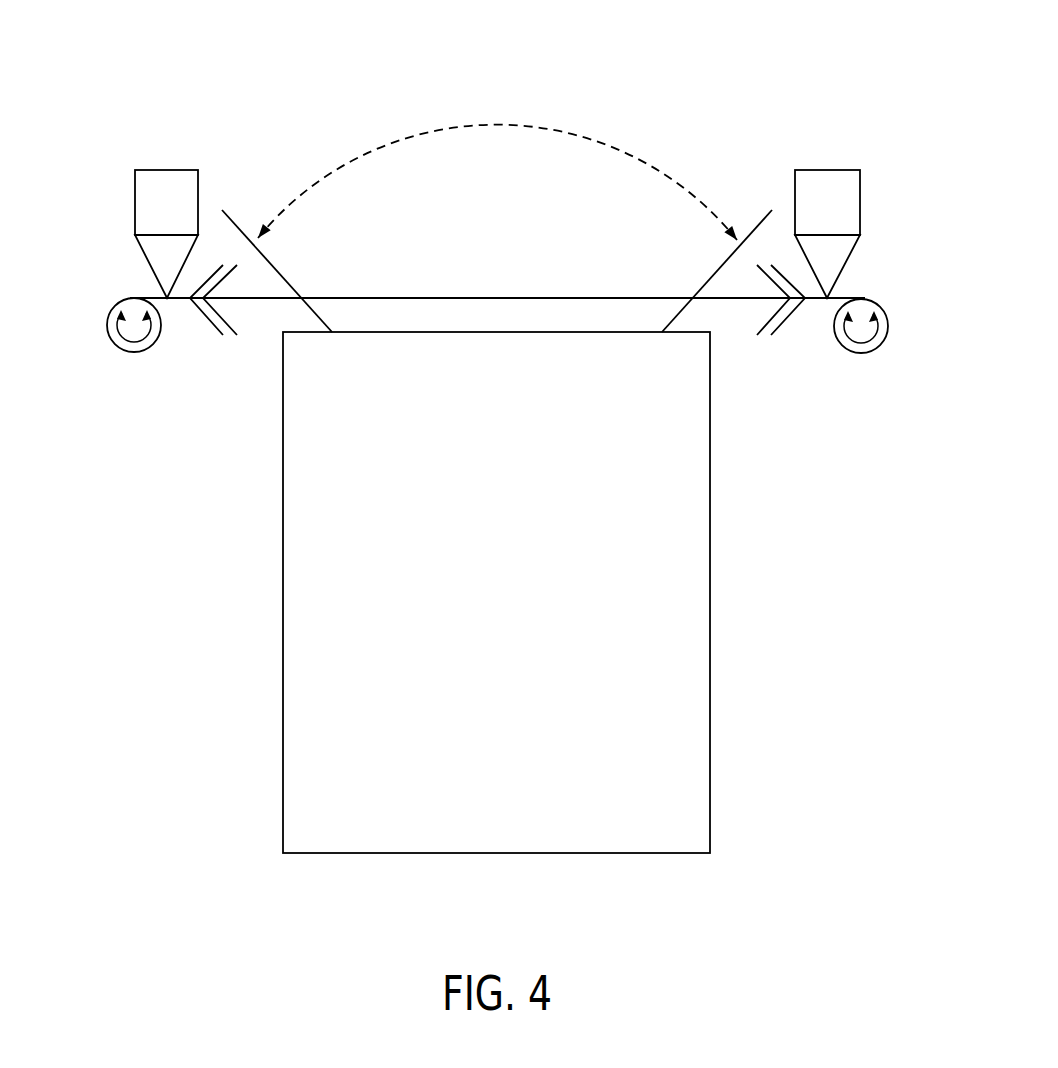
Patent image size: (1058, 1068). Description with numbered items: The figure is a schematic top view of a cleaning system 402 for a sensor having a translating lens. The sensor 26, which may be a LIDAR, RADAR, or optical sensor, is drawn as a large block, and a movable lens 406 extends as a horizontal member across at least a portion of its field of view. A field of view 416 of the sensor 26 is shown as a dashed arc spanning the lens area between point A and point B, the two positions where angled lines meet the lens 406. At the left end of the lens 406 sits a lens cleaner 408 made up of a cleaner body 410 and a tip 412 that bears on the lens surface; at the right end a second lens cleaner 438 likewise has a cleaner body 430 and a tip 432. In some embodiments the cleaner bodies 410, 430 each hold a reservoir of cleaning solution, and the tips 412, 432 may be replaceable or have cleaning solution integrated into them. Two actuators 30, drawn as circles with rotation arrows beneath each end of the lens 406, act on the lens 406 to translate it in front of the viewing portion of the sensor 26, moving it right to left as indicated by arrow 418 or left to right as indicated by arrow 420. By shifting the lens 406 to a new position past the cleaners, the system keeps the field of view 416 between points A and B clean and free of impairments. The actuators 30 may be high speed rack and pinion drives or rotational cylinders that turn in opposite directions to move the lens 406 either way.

The cleaning system 402 is at (194, 93).
The movable lens 406 is at (528, 298).
The lens cleaner 408 is at (121, 193).
The cleaner body 410 is at (133, 202).
The tip 412 is at (145, 265).
The field of view 416 is at (587, 138).
The arrow 418 is at (212, 325).
The arrow 420 is at (785, 322).
The cleaner body 430 is at (862, 200).
The tip 432 is at (843, 268).
The lens cleaner 438 is at (873, 191).
The actuator 30 is at (113, 348).
The sensor 26 is at (710, 663).
The point A is at (235, 225).
The point B is at (752, 227).